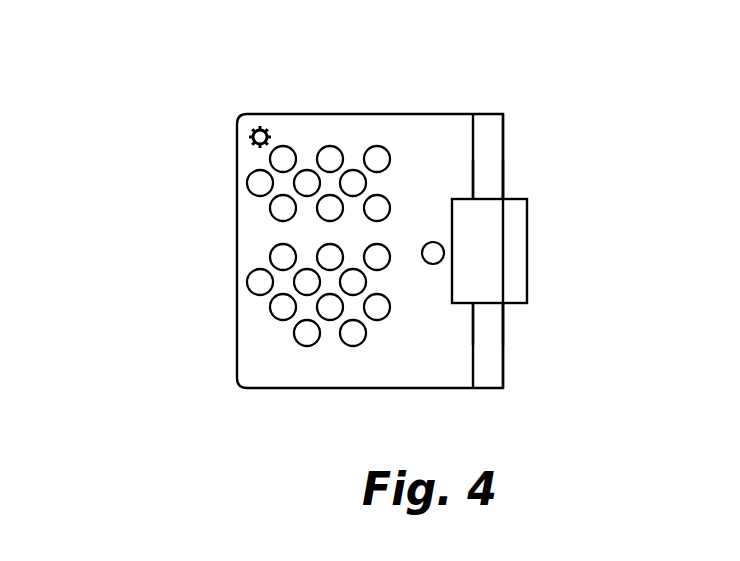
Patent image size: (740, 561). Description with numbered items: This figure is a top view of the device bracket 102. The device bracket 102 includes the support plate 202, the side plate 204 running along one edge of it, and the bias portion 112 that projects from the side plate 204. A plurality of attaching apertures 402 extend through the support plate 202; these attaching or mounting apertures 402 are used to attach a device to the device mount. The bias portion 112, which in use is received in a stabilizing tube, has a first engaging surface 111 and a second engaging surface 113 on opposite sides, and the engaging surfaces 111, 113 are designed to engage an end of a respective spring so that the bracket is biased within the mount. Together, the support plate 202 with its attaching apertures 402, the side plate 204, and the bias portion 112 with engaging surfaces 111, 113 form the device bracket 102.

The device bracket 102 is at (188, 112).
The support plate 202 is at (419, 130).
The attaching apertures 402 is at (372, 148).
The side plate 204 is at (490, 125).
The second engaging surface 113 is at (513, 196).
The bias portion 112 is at (510, 260).
The first engaging surface 111 is at (512, 306).